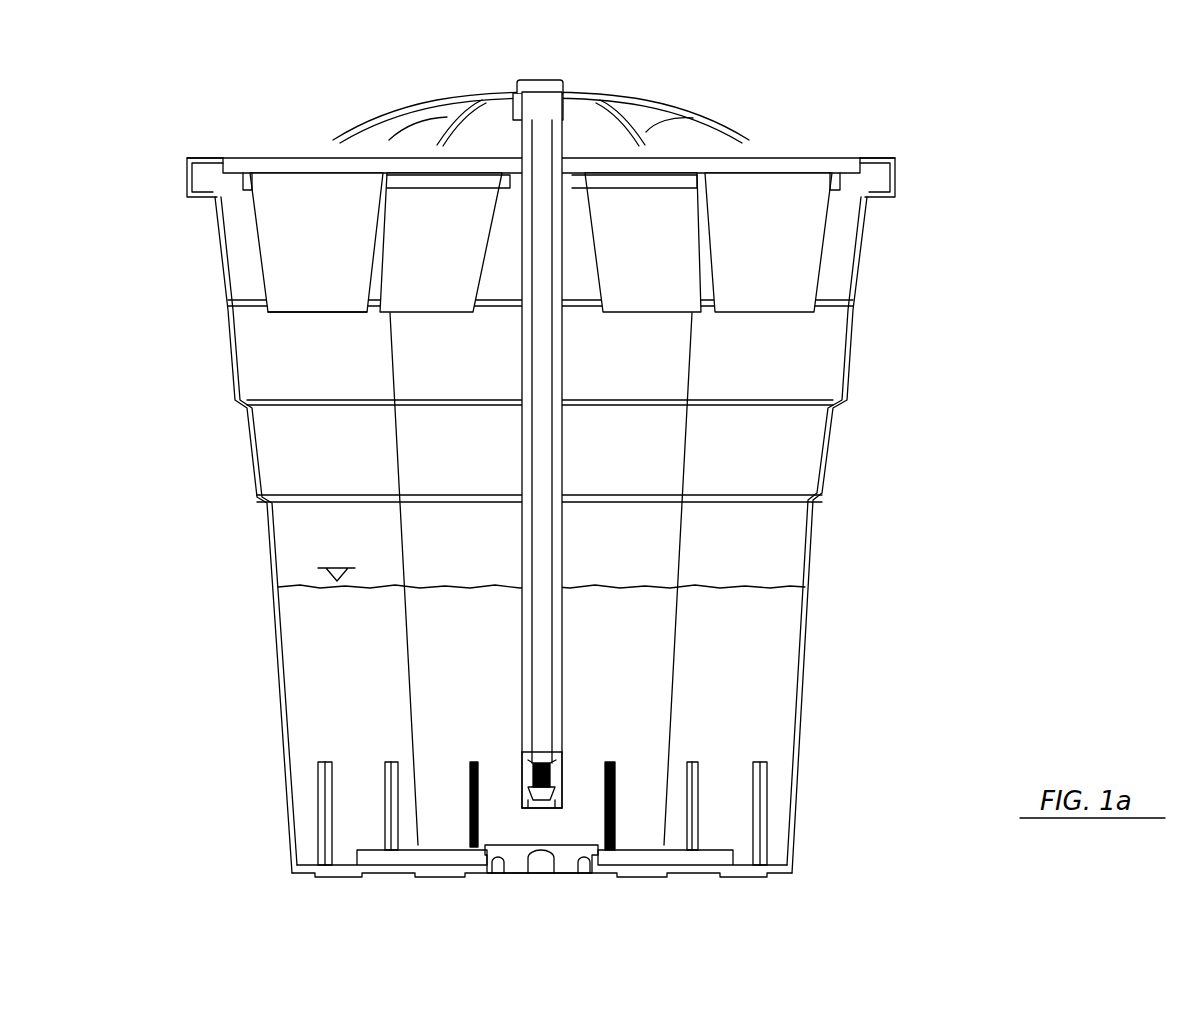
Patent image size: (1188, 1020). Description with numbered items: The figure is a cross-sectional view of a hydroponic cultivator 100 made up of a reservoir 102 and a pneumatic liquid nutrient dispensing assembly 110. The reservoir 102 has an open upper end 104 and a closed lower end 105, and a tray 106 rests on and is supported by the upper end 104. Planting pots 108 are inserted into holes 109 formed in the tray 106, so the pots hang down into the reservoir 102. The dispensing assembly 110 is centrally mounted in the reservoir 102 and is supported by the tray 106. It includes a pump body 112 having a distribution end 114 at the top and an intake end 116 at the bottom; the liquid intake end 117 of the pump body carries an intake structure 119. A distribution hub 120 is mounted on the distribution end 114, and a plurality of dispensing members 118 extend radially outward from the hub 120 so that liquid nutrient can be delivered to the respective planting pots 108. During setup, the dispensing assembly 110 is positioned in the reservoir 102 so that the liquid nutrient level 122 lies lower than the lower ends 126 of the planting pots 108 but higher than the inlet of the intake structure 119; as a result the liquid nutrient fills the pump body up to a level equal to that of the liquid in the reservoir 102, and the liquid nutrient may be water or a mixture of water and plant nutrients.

The hydroponic cultivator 100 is at (1000, 87).
The reservoir 102 is at (557, 550).
The open upper end 104 is at (876, 155).
The closed lower end 105 is at (778, 879).
The tray 106 is at (848, 157).
The planting pots 108 is at (322, 283).
The holes 109 is at (248, 158).
The pneumatic liquid nutrient dispensing assembly 110 is at (541, 83).
The pump body 112 is at (565, 553).
The distribution end 114 is at (563, 152).
The intake end 116 is at (548, 818).
The liquid intake end of the pump body 117 is at (567, 772).
The dispensing members 118 is at (541, 123).
The intake structure 119 is at (515, 776).
The distribution hub 120 is at (513, 83).
The liquid nutrient level 122 is at (340, 562).
The lower ends of the planting pots 126 is at (318, 315).